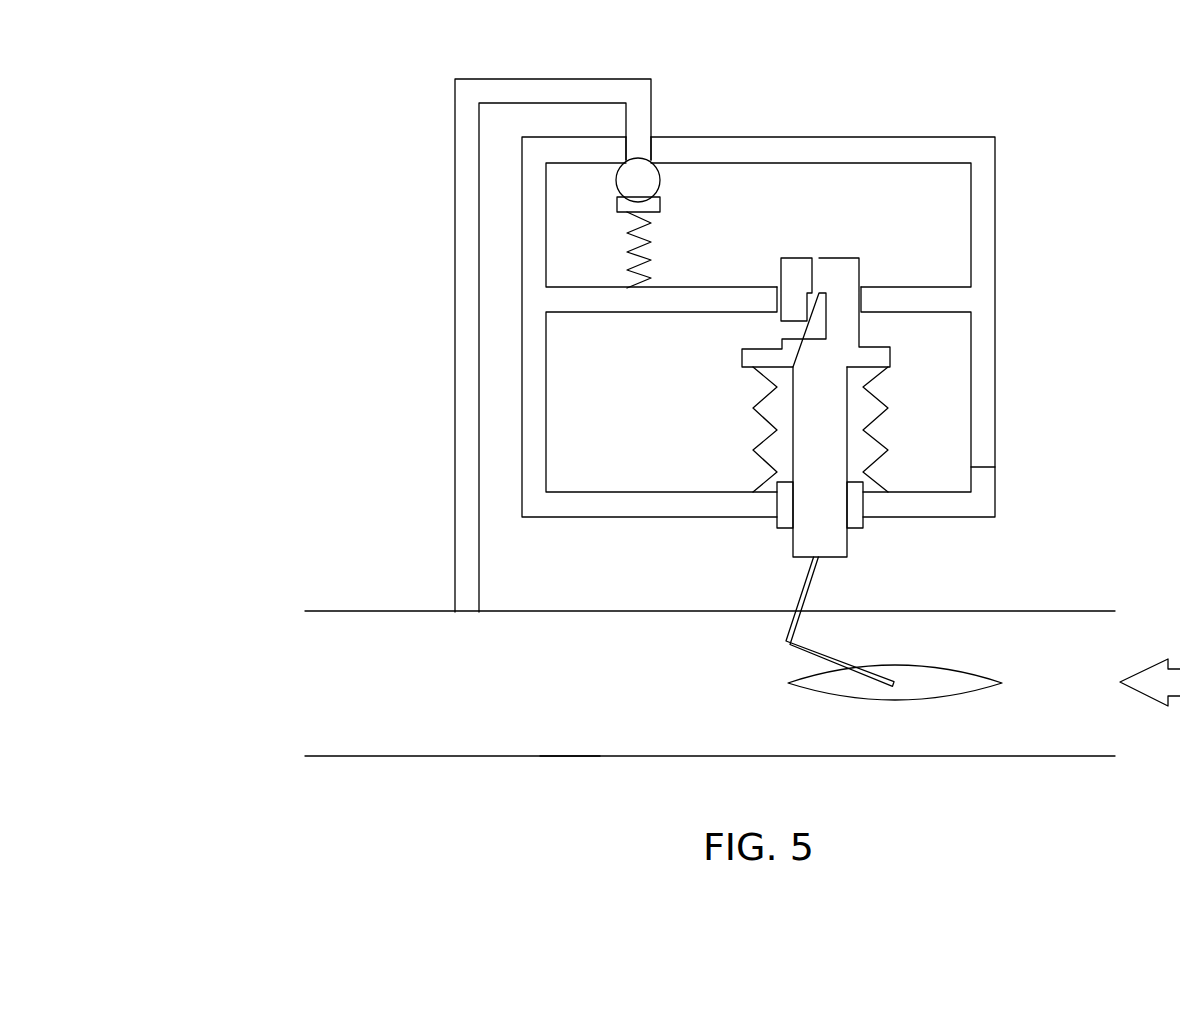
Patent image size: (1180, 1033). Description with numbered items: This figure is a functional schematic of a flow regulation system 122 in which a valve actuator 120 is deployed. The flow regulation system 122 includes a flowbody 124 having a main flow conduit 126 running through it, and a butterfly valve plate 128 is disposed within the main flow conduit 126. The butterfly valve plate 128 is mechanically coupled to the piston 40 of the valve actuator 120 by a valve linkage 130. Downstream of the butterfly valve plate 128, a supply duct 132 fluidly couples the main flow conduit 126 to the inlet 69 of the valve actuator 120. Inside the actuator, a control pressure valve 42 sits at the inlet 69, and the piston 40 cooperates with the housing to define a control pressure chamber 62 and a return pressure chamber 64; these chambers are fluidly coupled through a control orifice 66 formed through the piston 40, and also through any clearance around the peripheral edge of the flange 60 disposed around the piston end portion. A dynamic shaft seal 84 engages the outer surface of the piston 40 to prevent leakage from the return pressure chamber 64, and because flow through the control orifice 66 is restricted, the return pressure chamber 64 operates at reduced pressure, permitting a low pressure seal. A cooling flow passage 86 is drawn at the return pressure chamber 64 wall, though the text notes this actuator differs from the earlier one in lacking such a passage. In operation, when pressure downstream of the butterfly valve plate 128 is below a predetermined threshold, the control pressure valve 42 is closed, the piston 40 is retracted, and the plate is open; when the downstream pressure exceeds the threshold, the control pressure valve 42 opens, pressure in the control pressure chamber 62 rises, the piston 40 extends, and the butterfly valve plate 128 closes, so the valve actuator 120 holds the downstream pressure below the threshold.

The valve actuator 120 is at (1073, 120).
The supply duct 132 is at (460, 413).
The inlet 69 is at (640, 150).
The control pressure valve 42 is at (678, 202).
The control pressure chamber 62 is at (940, 203).
The return pressure chamber 64 is at (607, 365).
The cooling flow passage 86 is at (989, 478).
The control orifice 66 is at (818, 262).
The flange 60 is at (742, 356).
The piston 40 is at (848, 543).
The dynamic shaft seal 84 is at (777, 524).
The valve linkage 130 is at (828, 656).
The butterfly valve plate 128 is at (962, 695).
The flow regulation system 122 is at (318, 786).
The flowbody 124 is at (675, 757).
The main flow conduit 126 is at (568, 750).